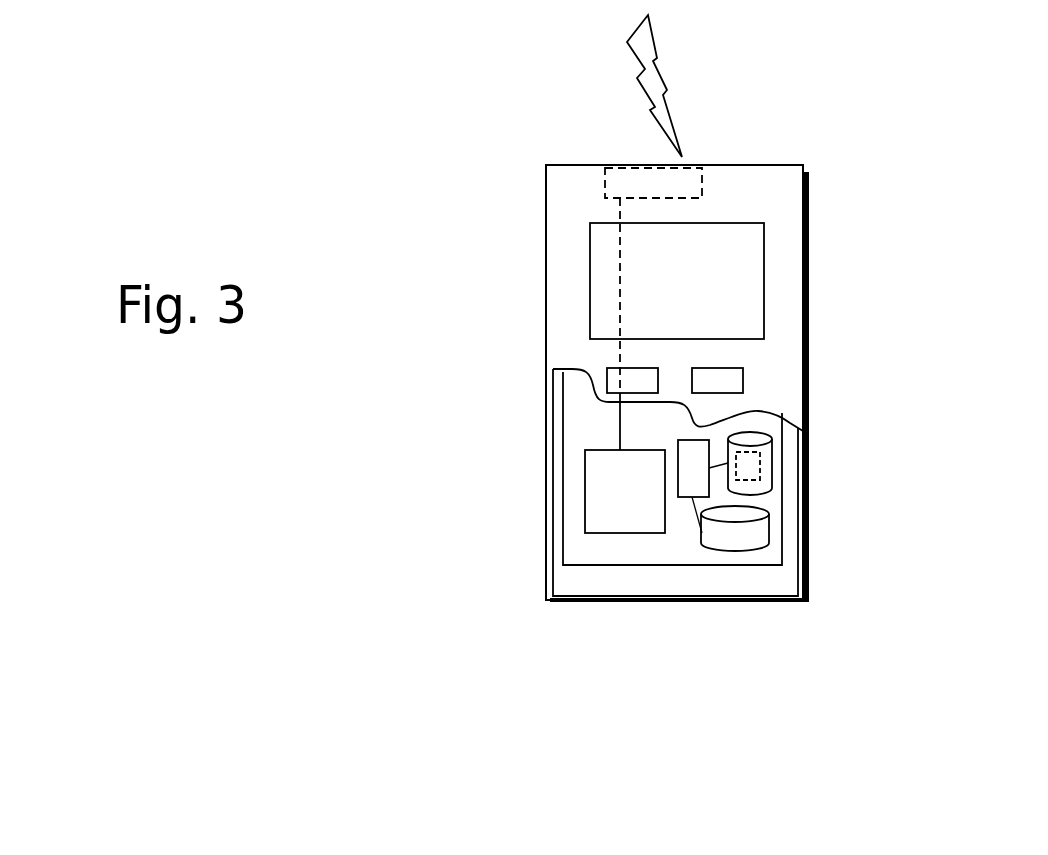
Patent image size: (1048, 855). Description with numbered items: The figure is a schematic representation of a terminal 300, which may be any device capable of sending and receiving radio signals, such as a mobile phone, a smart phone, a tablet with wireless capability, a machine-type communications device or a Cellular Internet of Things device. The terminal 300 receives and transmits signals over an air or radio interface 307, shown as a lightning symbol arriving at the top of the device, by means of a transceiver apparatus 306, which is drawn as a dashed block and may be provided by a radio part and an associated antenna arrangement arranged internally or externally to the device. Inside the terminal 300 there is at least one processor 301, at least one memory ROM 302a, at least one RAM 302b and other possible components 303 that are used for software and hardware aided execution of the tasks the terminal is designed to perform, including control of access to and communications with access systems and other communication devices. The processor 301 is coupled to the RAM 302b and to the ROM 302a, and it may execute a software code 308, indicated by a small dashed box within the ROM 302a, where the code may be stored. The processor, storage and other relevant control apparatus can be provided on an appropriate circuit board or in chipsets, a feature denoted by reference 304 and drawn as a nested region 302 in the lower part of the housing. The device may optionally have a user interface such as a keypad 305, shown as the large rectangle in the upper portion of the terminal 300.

The terminal 300 is at (547, 202).
The processor 301 is at (693, 457).
The battery compartment 302 is at (583, 550).
The memory ROM 302a is at (773, 468).
The RAM 302b is at (742, 527).
The other possible components 303 is at (610, 380).
The circuit board and/or chipsets 304 is at (590, 477).
The keypad 305 is at (605, 270).
The transceiver apparatus 306 is at (692, 177).
The air or radio interface 307 is at (683, 104).
The software code 308 is at (748, 465).